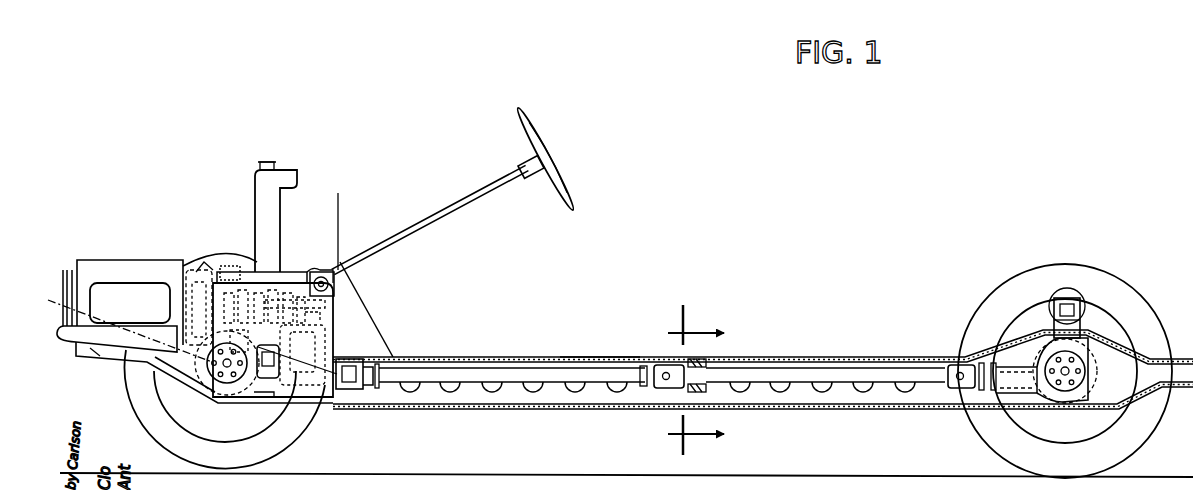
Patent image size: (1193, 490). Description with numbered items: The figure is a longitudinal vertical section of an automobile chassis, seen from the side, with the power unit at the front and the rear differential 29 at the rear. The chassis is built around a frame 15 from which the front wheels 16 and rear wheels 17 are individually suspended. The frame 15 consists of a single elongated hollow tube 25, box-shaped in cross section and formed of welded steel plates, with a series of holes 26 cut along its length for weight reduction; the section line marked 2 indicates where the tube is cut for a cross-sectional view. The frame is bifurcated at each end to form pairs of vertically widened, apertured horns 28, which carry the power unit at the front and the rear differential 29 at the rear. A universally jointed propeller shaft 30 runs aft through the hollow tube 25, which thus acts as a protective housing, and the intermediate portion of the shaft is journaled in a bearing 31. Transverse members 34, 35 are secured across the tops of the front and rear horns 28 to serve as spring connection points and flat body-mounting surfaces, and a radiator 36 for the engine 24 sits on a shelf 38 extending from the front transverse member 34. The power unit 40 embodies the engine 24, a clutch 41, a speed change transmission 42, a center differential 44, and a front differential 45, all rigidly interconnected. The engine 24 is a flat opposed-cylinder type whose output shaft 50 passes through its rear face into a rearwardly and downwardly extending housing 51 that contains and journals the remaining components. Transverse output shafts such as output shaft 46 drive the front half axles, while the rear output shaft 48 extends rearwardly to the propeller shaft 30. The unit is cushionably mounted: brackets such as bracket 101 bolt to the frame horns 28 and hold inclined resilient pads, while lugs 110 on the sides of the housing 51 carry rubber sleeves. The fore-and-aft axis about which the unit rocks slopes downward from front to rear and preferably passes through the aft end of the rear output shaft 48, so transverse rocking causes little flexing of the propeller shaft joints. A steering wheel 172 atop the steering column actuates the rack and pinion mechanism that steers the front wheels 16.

The section line 2- 2 is at (705, 380).
The frame 15 is at (539, 353).
The front wheels 16 is at (328, 411).
The rear wheels 17 is at (1108, 277).
The engine 24 is at (117, 262).
The hollow tube 25 is at (596, 354).
The holes 26 is at (497, 357).
The horns 28 is at (92, 350).
The rear differential 29 is at (1068, 401).
The propeller shaft 30 is at (823, 367).
The bearing 31 is at (702, 393).
The front transverse member 34 is at (232, 265).
The rear transverse member 35 is at (1070, 298).
The radiator 36 is at (262, 208).
The shelf 38 is at (273, 276).
The power unit 40 is at (196, 261).
The clutch 41 is at (186, 270).
The speed change transmission 42 is at (254, 390).
The center differential 44 is at (316, 324).
The front differential 45 is at (222, 392).
The output shaft 46 is at (230, 360).
The rear output shaft 48 is at (338, 361).
The output shaft 50 is at (178, 295).
The housing 51 is at (209, 264).
The bracket 101 is at (68, 345).
The lug 110 is at (270, 379).
The steering wheel 172 is at (553, 172).